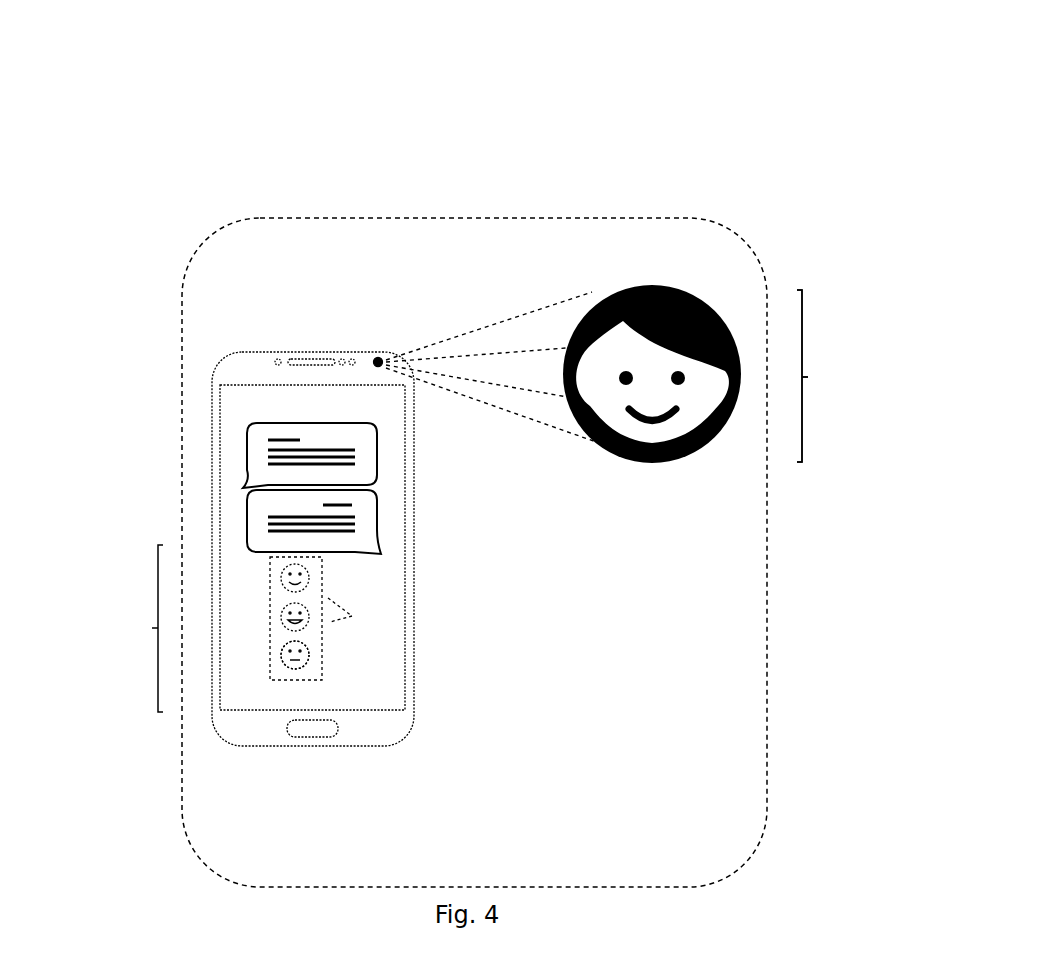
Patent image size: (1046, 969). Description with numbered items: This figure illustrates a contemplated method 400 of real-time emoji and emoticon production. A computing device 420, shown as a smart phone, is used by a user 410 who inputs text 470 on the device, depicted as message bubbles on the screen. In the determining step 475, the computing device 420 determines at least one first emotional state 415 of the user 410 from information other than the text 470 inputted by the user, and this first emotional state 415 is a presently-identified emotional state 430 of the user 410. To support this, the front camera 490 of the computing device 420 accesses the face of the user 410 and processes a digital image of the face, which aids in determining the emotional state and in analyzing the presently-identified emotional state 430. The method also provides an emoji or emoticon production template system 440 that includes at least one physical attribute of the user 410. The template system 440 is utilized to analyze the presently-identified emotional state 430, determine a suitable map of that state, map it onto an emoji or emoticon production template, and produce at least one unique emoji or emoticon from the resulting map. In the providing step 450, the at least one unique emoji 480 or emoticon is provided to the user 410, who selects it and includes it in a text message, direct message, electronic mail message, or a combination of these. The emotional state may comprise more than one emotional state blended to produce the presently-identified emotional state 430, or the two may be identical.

The method of real-time emoji and emoticon production 400 is at (293, 178).
The user 410 is at (728, 320).
The first emotional state 415 is at (869, 376).
The presently-identified emotional state 430 is at (802, 376).
The computing device 420 is at (203, 497).
The emoji or emoticon production template system 440 is at (337, 577).
The providing step 450 is at (193, 628).
The text 470 is at (385, 465).
The determining step 475 is at (518, 297).
The unique emoji 480 is at (308, 658).
The front camera 490 is at (380, 354).